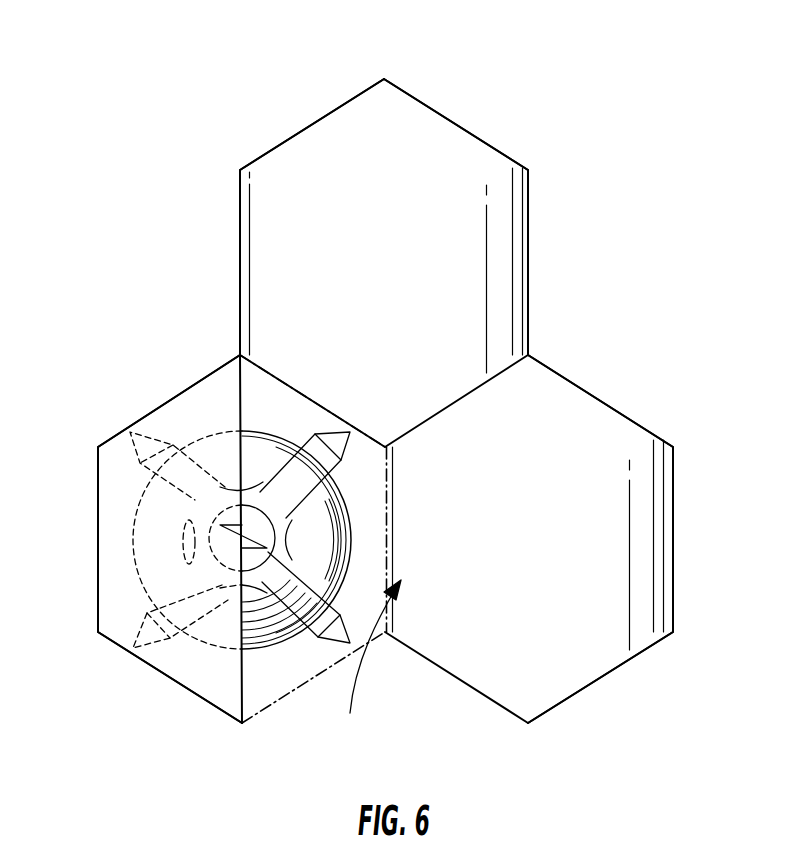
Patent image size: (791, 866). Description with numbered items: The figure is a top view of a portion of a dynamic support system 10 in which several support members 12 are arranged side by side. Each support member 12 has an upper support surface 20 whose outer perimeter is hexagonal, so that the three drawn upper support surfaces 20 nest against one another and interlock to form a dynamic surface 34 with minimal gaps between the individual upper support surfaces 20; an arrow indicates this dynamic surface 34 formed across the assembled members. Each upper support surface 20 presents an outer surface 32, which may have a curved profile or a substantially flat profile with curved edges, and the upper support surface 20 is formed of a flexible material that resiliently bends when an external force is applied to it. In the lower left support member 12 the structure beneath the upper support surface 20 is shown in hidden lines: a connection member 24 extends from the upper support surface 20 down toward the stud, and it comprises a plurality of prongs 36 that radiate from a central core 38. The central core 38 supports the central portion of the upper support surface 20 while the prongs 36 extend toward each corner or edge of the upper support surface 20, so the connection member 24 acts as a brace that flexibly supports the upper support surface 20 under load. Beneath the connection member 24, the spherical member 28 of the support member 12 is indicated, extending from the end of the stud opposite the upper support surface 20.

The dynamic support system 10 is at (116, 134).
The support member 12 is at (530, 193).
The upper support surface 20 is at (318, 120).
The connection member 24 is at (267, 573).
The spherical member 28 is at (267, 430).
The outer surface 32 is at (420, 135).
The dynamic surface 34 is at (370, 665).
The prongs 36 is at (293, 567).
The central core 38 is at (268, 550).